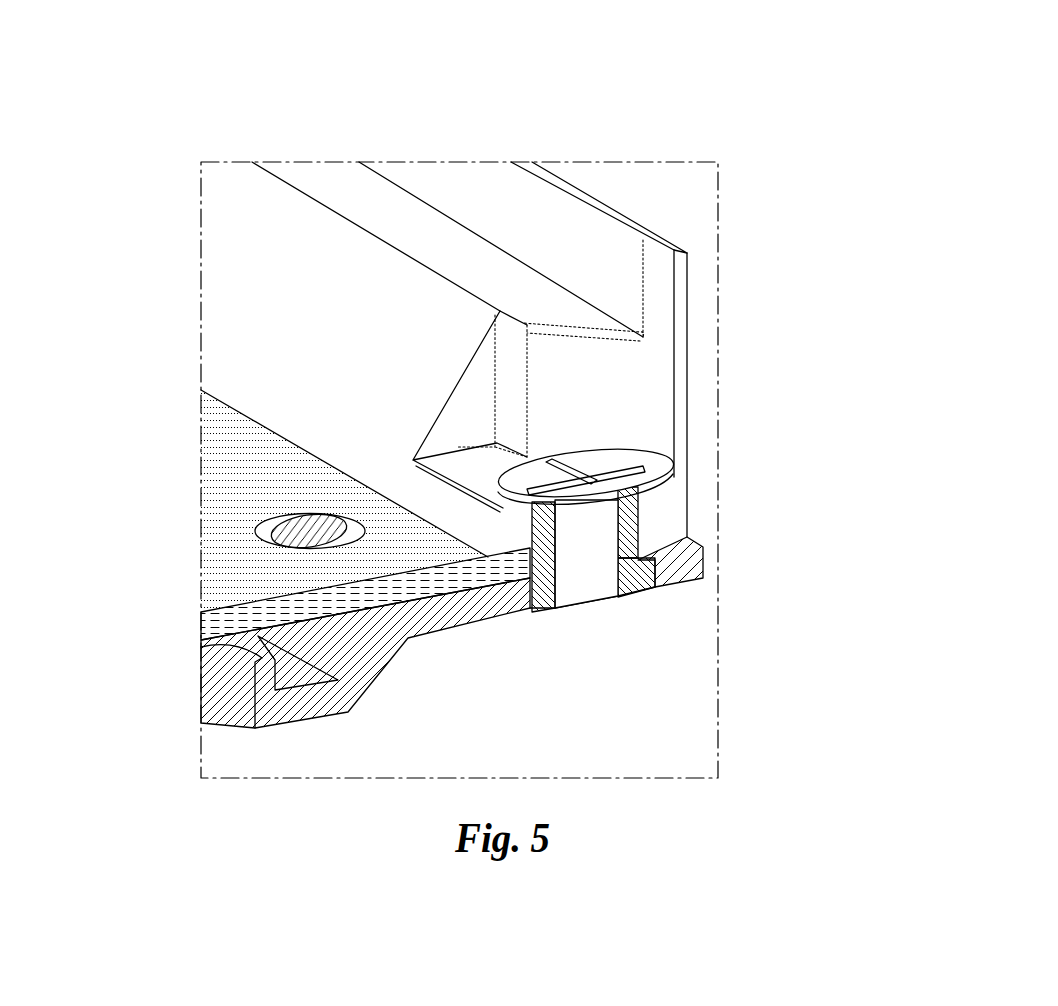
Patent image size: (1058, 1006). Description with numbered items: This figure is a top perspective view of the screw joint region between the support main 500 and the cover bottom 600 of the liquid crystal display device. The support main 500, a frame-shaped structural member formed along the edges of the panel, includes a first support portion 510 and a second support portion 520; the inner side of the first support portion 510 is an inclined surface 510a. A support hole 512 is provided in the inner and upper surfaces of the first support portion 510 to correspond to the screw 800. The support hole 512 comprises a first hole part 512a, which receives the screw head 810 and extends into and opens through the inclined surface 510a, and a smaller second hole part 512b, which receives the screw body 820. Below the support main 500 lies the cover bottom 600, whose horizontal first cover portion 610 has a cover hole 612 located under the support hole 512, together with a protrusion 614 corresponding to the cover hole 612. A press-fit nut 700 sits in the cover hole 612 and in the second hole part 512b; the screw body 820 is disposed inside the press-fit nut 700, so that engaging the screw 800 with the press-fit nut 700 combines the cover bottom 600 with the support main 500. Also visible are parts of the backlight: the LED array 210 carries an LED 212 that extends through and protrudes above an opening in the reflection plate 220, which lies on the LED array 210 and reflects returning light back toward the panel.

The support main 500 is at (501, 285).
The first support portion 510 is at (367, 187).
The second support portion 520 is at (465, 183).
The inclined surface 510a is at (246, 290).
The support hole 512 is at (789, 404).
The first hole part 512a is at (630, 402).
The second hole part 512b is at (642, 516).
The LED 212 is at (298, 533).
The reflection plate 220 is at (298, 515).
The LED array 210 is at (205, 630).
The cover bottom 600 is at (428, 668).
The first cover portion 610 is at (443, 627).
The cover hole 612 is at (765, 616).
The protrusion 614 is at (662, 580).
The press-fit nut 700 is at (625, 600).
The screw 800 is at (584, 598).
The screw head 810 is at (512, 517).
The screw body 820 is at (580, 577).